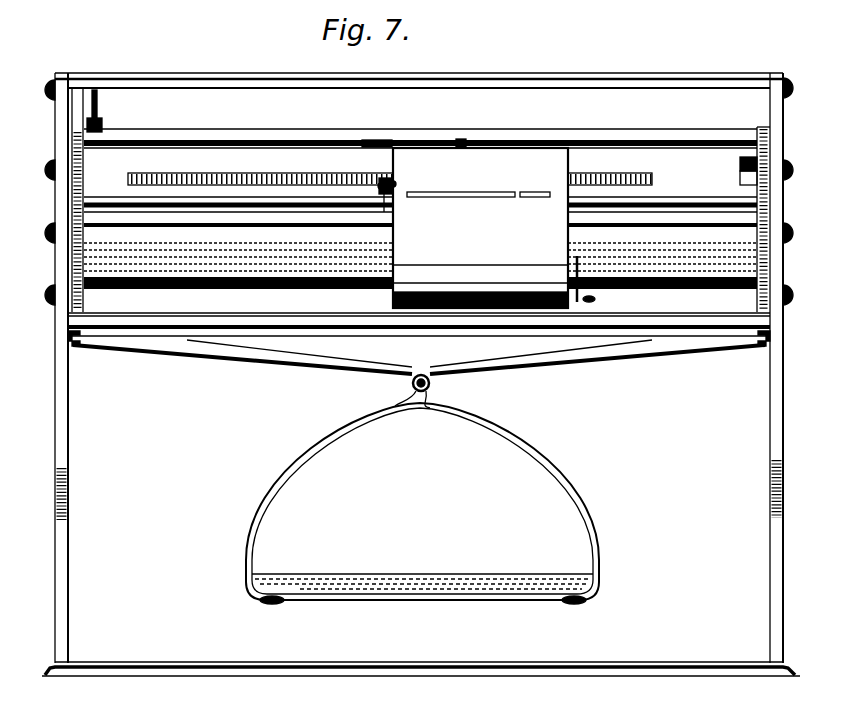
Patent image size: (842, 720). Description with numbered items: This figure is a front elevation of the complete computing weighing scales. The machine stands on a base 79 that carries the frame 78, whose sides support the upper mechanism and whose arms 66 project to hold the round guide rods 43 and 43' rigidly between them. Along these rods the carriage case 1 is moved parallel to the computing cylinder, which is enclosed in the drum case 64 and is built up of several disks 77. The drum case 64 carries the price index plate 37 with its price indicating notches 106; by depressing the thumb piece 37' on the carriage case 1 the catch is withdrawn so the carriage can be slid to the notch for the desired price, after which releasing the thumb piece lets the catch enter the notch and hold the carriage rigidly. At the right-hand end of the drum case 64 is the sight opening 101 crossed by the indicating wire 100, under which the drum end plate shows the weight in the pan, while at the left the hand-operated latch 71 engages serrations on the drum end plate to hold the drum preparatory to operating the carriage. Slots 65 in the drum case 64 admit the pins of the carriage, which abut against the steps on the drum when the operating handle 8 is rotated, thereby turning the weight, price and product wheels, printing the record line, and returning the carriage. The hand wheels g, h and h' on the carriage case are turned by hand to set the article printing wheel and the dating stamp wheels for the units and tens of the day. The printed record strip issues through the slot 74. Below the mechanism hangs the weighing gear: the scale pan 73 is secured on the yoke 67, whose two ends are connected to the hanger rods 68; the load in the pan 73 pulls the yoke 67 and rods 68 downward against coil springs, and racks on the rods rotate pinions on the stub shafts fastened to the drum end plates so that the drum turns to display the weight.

The carriage case 1 is at (480, 228).
The operating handle 8 is at (595, 282).
The price index plate 37 is at (420, 127).
The thumb piece 37' is at (474, 127).
The rod 43 is at (420, 210).
The lower guide bar 43' is at (419, 289).
The drum case 64 is at (419, 97).
The slots 65 is at (175, 173).
The arms 66 is at (80, 192).
The yoke 67 is at (262, 354).
The hanger rods 68 is at (66, 337).
The latch 71 is at (99, 103).
The scale pan 73 is at (447, 573).
The slot 74 is at (525, 198).
The disks 77 is at (272, 180).
The frame 78 is at (57, 381).
The base 79 is at (357, 664).
The indicating wire 100 is at (740, 175).
The sight opening 101 is at (740, 163).
The price indicating notch 106 is at (392, 139).
The hand wheel g is at (393, 193).
The hand wheel h is at (402, 177).
The hand wheel h' is at (364, 200).